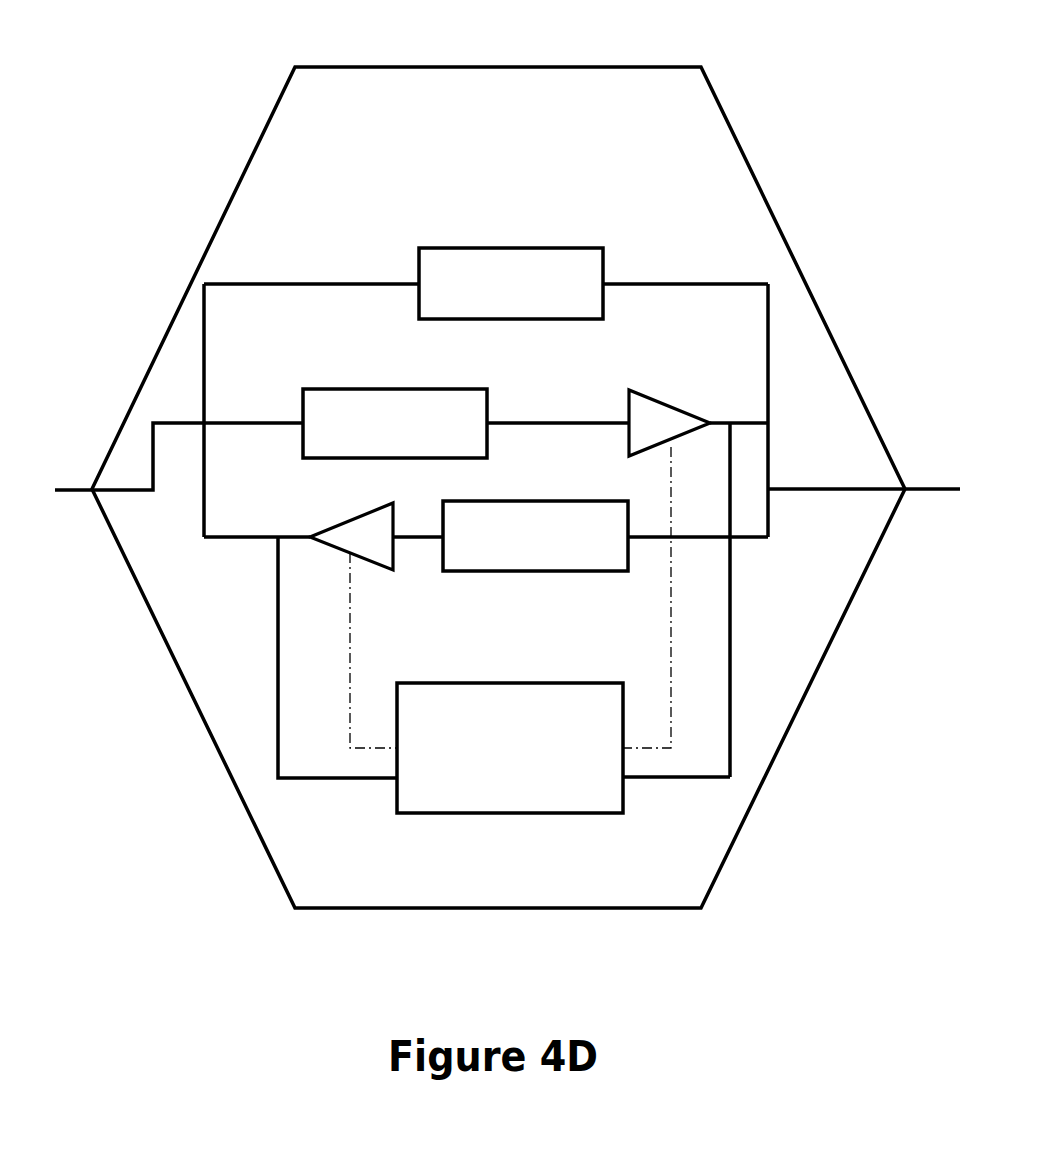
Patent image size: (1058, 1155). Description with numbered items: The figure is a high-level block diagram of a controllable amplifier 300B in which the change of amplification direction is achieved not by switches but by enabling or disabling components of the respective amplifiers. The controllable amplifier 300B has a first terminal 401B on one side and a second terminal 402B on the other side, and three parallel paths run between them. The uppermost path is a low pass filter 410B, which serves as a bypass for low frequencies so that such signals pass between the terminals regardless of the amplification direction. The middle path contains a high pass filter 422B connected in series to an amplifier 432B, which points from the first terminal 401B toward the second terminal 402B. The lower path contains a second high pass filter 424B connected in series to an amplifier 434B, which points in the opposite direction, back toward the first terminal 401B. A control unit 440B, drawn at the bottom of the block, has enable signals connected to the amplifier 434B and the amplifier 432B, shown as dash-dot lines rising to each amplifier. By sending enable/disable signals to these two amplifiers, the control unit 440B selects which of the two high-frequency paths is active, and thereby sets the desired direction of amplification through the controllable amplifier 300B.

The controllable amplifier 300B is at (493, 66).
The first terminal 401B is at (70, 488).
The second terminal 402B is at (928, 485).
The low pass filter 410B is at (525, 248).
The high pass filter 422B is at (423, 388).
The high pass filter 424B is at (583, 500).
The amplifier 432B is at (642, 393).
The amplifier 434B is at (352, 515).
The control unit 440B is at (505, 682).